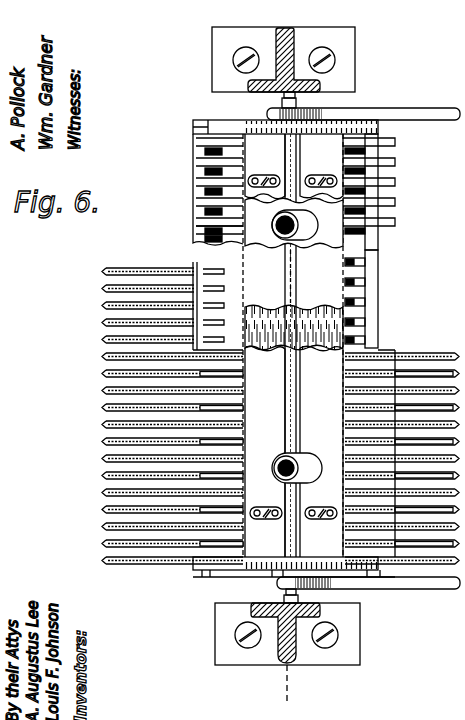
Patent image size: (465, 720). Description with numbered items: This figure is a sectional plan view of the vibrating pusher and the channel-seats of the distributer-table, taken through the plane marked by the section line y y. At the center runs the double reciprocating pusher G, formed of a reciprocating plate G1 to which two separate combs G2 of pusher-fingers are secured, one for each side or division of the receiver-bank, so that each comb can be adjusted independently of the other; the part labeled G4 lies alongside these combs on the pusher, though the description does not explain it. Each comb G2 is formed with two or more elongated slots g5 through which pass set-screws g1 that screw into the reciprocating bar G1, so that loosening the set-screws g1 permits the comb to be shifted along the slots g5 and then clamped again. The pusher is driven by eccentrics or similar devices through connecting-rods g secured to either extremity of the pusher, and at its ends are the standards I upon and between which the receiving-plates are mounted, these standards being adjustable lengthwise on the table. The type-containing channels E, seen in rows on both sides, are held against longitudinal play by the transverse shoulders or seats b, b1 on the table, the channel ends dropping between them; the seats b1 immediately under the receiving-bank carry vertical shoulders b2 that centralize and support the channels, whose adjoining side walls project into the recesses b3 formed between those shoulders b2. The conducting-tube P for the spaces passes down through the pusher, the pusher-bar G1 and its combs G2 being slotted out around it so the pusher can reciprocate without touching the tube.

The standard I is at (280, 33).
The connecting-rod g is at (363, 351).
The reciprocating plate G1 is at (294, 327).
The comb G2 is at (265, 345).
The guide block G4 is at (322, 345).
The set-screw g1 is at (264, 540).
The elongated slot g5 is at (264, 187).
The transverse shoulder b is at (198, 204).
The seat b1 is at (368, 228).
The vertical shoulder b2 is at (200, 205).
The recess b3 is at (198, 234).
The conducting-tube P is at (260, 471).
The section line y is at (284, 483).
The type-containing channel E is at (155, 413).